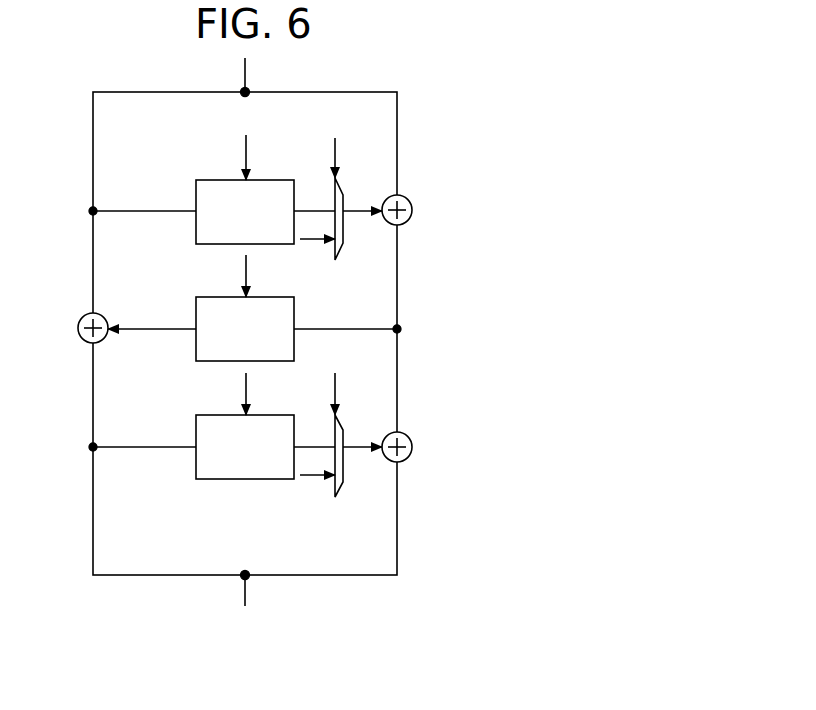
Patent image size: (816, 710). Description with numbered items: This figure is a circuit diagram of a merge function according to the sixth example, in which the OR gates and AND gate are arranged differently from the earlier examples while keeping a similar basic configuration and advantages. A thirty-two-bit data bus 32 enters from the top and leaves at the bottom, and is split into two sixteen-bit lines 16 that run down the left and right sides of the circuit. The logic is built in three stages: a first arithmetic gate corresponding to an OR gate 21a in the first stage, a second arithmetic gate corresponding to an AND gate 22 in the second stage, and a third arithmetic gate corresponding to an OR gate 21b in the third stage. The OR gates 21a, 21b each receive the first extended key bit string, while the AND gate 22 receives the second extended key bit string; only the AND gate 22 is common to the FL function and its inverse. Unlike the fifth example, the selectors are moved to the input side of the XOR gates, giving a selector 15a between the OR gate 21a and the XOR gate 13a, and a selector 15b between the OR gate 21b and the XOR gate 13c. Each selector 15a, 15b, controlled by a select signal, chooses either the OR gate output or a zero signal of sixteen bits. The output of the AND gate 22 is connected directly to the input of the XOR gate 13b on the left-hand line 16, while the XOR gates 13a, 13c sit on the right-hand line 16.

The bits 16 is at (97, 154).
The 32-bit data line 32 is at (252, 84).
The OR gate 21a is at (196, 180).
The OR gate 21b is at (196, 415).
The AND gate 22 is at (196, 297).
The XOR gate 13a is at (410, 200).
The XOR gate 13b is at (83, 316).
The XOR gate 13c is at (410, 437).
The selector 15a is at (345, 237).
The selector 15b is at (345, 473).